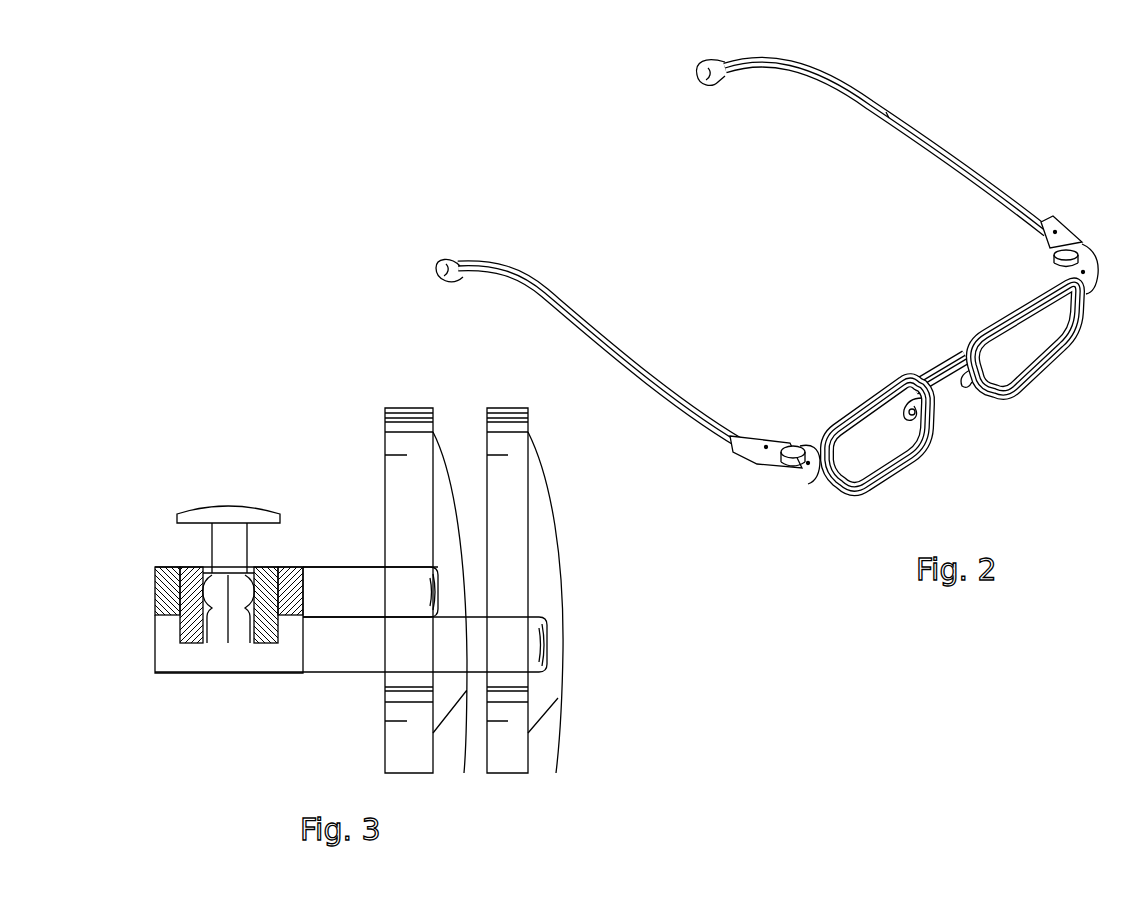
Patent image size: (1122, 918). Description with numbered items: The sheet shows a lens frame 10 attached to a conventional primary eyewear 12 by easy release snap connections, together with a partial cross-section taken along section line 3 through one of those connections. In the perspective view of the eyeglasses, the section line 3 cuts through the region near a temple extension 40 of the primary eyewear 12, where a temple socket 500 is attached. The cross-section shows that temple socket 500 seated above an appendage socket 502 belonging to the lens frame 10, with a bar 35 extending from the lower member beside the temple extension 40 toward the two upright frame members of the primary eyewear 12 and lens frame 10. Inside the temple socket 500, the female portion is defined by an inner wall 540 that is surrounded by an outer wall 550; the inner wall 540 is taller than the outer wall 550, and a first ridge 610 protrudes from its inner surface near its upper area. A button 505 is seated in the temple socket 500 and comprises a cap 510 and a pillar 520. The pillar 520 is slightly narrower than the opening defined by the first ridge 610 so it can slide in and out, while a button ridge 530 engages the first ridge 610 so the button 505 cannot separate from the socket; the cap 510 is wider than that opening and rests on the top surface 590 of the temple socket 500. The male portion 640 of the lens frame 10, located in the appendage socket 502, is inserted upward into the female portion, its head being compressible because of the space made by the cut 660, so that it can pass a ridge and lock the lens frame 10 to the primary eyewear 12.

In FIG. 2, the section line 3- 3 is at (820, 425).
In FIG. 3, the lens frame 10 is at (505, 404).
In FIG. 3, the primary eyewear 12 is at (403, 404).
In FIG. 3, the lower connecting bar 35 is at (352, 676).
In FIG. 3, the temple extension 40 is at (367, 566).
In FIG. 3, the temple socket 500 is at (150, 598).
In FIG. 3, the appendage socket 502 is at (150, 659).
In FIG. 3, the button 505 is at (221, 507).
In FIG. 3, the cap 510 is at (212, 506).
In FIG. 3, the pillar 520 is at (205, 567).
In FIG. 3, the button ridge 530 is at (256, 566).
In FIG. 3, the inner wall 540 is at (270, 650).
In FIG. 3, the outer wall 550 is at (302, 570).
In FIG. 3, the top surface of the temple socket 590 is at (158, 569).
In FIG. 3, the first ridge 610 is at (222, 550).
In FIG. 3, the male portion 640 is at (240, 640).
In FIG. 3, the cut 660 is at (228, 645).